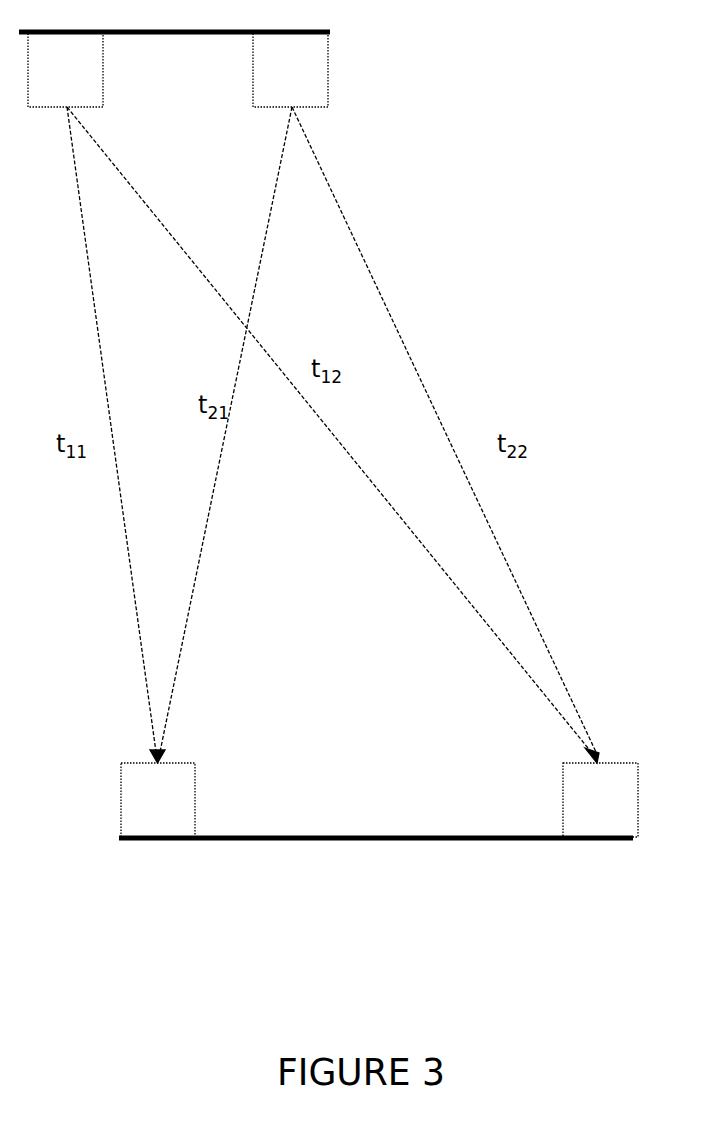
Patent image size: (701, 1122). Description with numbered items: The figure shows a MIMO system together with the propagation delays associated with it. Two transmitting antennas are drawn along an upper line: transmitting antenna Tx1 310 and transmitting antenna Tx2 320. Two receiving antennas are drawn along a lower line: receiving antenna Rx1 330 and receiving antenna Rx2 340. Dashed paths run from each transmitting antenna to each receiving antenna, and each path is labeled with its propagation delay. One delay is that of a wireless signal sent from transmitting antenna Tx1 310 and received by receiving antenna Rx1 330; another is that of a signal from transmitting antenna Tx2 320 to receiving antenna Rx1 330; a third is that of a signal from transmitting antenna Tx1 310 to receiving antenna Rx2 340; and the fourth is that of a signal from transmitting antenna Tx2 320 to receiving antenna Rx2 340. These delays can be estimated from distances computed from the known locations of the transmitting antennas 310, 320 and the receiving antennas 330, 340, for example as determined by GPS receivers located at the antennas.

The transmitting antenna Tx1 310 is at (49, 92).
The transmitting antenna Tx2 320 is at (313, 92).
The receiving antenna Rx1 330 is at (140, 826).
The receiving antenna Rx2 340 is at (580, 826).